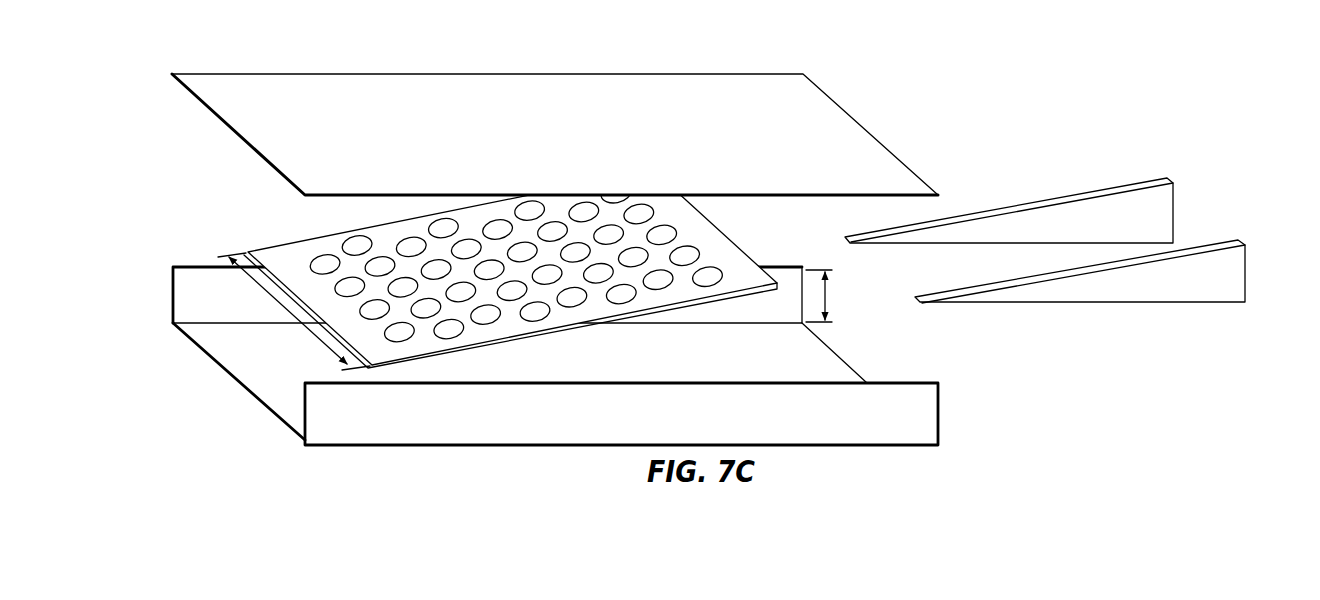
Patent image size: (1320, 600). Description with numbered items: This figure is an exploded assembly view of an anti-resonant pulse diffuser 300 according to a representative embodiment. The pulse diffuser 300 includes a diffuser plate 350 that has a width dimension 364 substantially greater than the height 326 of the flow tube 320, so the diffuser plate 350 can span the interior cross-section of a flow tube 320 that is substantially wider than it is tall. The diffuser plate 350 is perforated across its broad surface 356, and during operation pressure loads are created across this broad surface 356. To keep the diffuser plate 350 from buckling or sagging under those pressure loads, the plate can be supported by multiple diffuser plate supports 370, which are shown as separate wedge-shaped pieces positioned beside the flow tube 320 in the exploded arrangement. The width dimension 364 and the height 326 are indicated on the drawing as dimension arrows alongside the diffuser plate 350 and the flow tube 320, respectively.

The pulse diffuser 300 is at (148, 116).
The flow tube 320 is at (938, 410).
The height of the flow tube 326 is at (832, 296).
The diffuser plate 350 is at (333, 252).
The broad surface 356 is at (524, 232).
The width dimension 364 is at (288, 309).
The diffuser plate supports 370 is at (1150, 213).